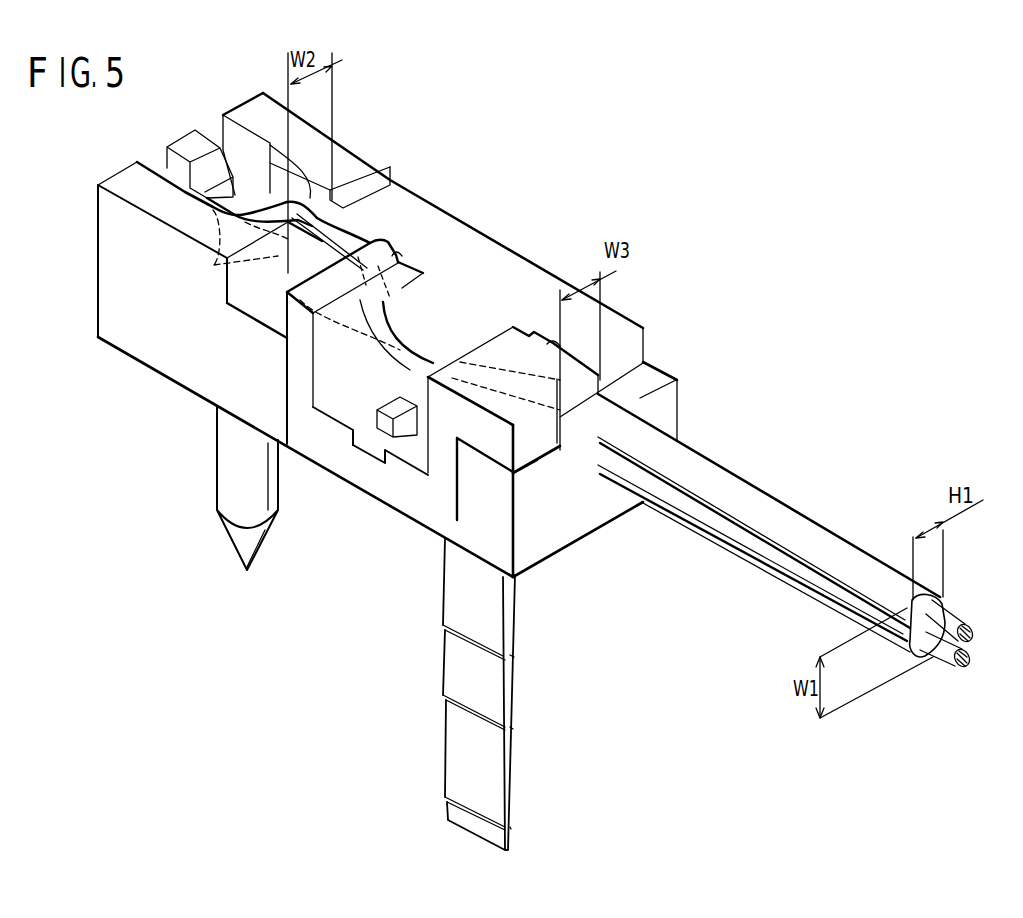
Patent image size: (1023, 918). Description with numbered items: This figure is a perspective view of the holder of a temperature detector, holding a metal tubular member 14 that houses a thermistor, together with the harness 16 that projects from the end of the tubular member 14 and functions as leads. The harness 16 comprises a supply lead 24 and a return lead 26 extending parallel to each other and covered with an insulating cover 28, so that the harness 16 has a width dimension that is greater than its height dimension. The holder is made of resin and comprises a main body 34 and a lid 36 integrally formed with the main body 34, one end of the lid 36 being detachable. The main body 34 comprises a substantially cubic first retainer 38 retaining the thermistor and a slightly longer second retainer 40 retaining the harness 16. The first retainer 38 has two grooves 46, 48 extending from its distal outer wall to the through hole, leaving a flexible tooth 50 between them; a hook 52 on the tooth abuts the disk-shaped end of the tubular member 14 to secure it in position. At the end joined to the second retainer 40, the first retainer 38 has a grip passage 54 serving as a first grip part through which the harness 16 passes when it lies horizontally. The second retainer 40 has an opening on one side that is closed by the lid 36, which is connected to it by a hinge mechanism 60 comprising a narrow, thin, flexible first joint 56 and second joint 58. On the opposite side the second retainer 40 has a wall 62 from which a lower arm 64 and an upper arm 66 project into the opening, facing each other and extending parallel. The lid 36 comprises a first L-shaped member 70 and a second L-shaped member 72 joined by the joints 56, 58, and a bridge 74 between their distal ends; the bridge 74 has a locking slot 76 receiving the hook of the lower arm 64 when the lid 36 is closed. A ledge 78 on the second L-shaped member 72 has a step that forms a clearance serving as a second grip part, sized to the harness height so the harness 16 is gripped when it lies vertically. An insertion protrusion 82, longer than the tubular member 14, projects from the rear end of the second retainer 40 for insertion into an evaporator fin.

The tubular member 14 is at (222, 493).
The harness 16 is at (917, 698).
The supply lead 24 is at (978, 643).
The return lead 26 is at (938, 643).
The insulating cover 28 is at (898, 633).
The main body 34 is at (470, 266).
The lid 36 is at (428, 521).
The first retainer 38 is at (346, 169).
The second retainer 40 is at (412, 205).
The groove 46 is at (157, 160).
The groove 48 is at (243, 140).
The flexible tooth 50 is at (187, 147).
The hook 52 is at (213, 207).
The grip passage 54 is at (298, 210).
The first joint 56 is at (383, 240).
The second joint 58 is at (535, 333).
The hinge mechanism 60 is at (513, 310).
The wall 62 is at (640, 347).
The lower arm 64 is at (400, 412).
The upper arm 66 is at (287, 350).
The first L-shaped member 70 is at (293, 378).
The second L-shaped member 72 is at (443, 500).
The bridge 74 is at (337, 407).
The locking slot 76 is at (363, 443).
The ledge 78 is at (542, 453).
The insertion protrusion 82 is at (507, 750).